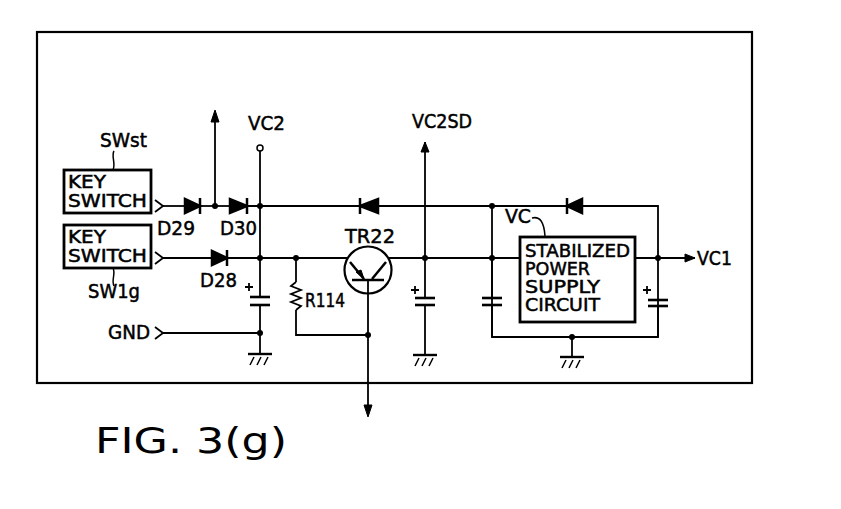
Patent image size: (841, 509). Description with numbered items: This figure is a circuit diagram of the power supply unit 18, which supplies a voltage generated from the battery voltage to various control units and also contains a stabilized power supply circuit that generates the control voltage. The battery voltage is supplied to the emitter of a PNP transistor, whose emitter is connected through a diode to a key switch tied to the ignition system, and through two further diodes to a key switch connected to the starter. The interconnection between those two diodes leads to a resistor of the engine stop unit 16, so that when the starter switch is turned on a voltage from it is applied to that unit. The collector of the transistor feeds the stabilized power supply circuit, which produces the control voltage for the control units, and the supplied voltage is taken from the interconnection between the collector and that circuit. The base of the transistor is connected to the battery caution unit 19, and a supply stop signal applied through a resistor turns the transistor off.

The power supply unit 18 is at (440, 31).
The engine stop unit 16 is at (309, 144).
The battery caution unit 19 is at (492, 390).